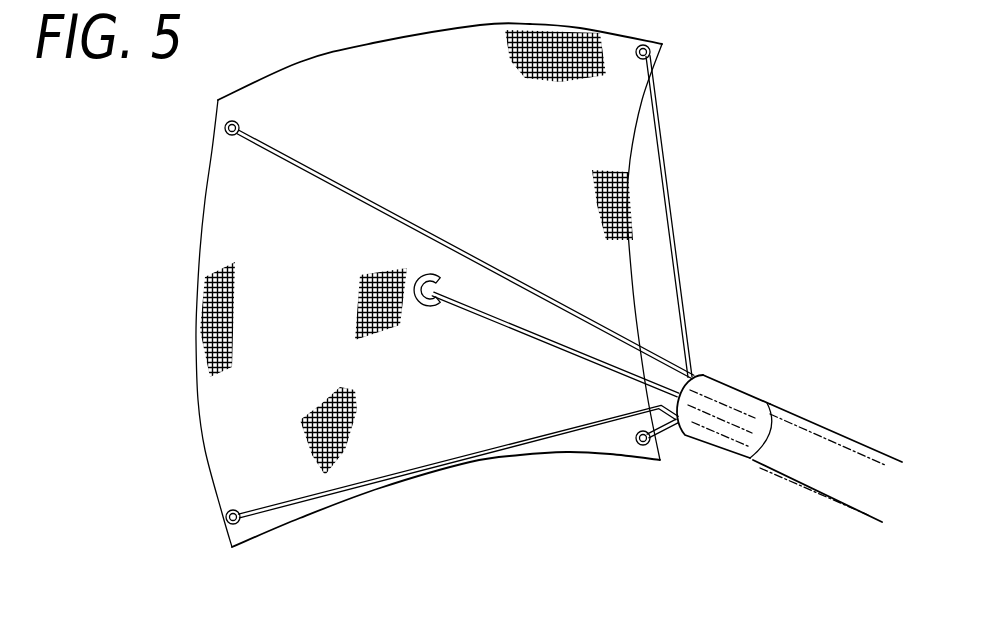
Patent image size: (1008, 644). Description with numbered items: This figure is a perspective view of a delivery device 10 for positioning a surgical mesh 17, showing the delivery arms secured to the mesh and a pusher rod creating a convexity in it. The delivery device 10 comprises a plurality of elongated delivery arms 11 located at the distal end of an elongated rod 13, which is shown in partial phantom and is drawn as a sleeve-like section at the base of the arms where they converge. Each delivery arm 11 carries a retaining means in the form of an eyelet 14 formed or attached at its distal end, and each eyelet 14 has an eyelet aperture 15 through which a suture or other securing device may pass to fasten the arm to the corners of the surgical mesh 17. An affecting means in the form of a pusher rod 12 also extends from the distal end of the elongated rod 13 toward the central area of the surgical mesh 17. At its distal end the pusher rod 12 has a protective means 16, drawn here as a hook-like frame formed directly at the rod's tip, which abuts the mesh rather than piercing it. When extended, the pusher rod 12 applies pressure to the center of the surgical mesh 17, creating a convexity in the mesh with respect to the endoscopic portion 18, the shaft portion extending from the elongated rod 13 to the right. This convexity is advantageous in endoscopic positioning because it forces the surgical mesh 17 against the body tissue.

The delivery device 10 is at (698, 273).
The delivery arms 11 is at (670, 228).
The pusher rod 12 is at (548, 343).
The elongated rod 13 is at (800, 450).
The eyelets 14 is at (226, 518).
The eyelet aperture 15 is at (237, 525).
The protective means 16 is at (427, 308).
The surgical mesh 17 is at (368, 45).
The endoscopic portion 18 is at (867, 445).